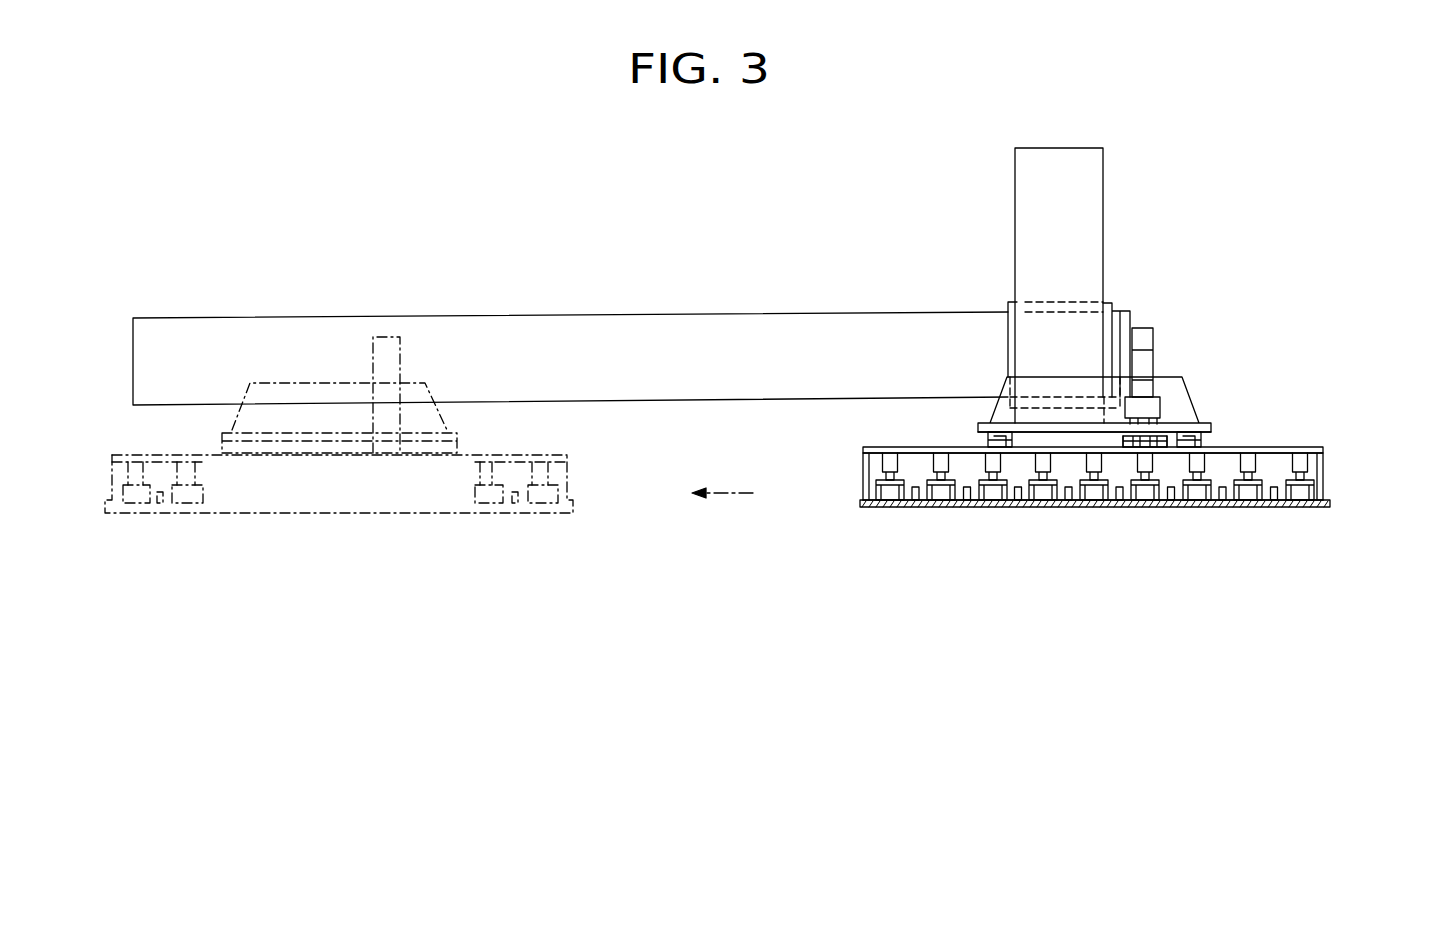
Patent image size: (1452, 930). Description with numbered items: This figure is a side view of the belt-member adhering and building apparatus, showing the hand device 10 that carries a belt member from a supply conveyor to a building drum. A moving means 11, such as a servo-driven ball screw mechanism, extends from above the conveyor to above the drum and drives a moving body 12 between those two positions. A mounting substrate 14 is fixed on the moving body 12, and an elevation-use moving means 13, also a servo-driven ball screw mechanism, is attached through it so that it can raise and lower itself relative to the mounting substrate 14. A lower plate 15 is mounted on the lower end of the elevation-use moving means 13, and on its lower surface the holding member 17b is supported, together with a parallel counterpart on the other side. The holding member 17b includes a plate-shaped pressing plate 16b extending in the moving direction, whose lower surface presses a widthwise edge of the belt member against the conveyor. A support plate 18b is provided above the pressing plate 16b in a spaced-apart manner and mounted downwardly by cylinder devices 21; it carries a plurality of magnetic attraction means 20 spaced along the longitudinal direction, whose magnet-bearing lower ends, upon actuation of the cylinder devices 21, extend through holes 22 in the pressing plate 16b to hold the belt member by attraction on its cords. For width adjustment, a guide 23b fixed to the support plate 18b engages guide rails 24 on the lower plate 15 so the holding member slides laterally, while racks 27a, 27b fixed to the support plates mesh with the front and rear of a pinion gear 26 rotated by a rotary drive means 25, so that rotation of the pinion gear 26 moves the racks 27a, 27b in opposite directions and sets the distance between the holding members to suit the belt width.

The hand device 10 is at (548, 516).
The moving means 11 is at (523, 318).
The moving body 12 is at (1112, 298).
The elevation-use moving means 13 is at (1097, 192).
The mounting substrate 14 is at (1107, 328).
The lower plate 15 is at (1182, 432).
The pressing plate 16b is at (1222, 503).
The holding member 17b is at (1328, 450).
The support plate 18b is at (1305, 448).
The magnetic attraction means 20 is at (908, 488).
The cylinder device 21 is at (890, 462).
The hole 22 is at (1133, 505).
The guide 23b is at (993, 442).
The guide rail 24 is at (997, 437).
The rotary drive means 25 is at (1153, 408).
The pinion gear 26 is at (1142, 447).
The rack 27a is at (1127, 438).
The rack 27b is at (1167, 447).